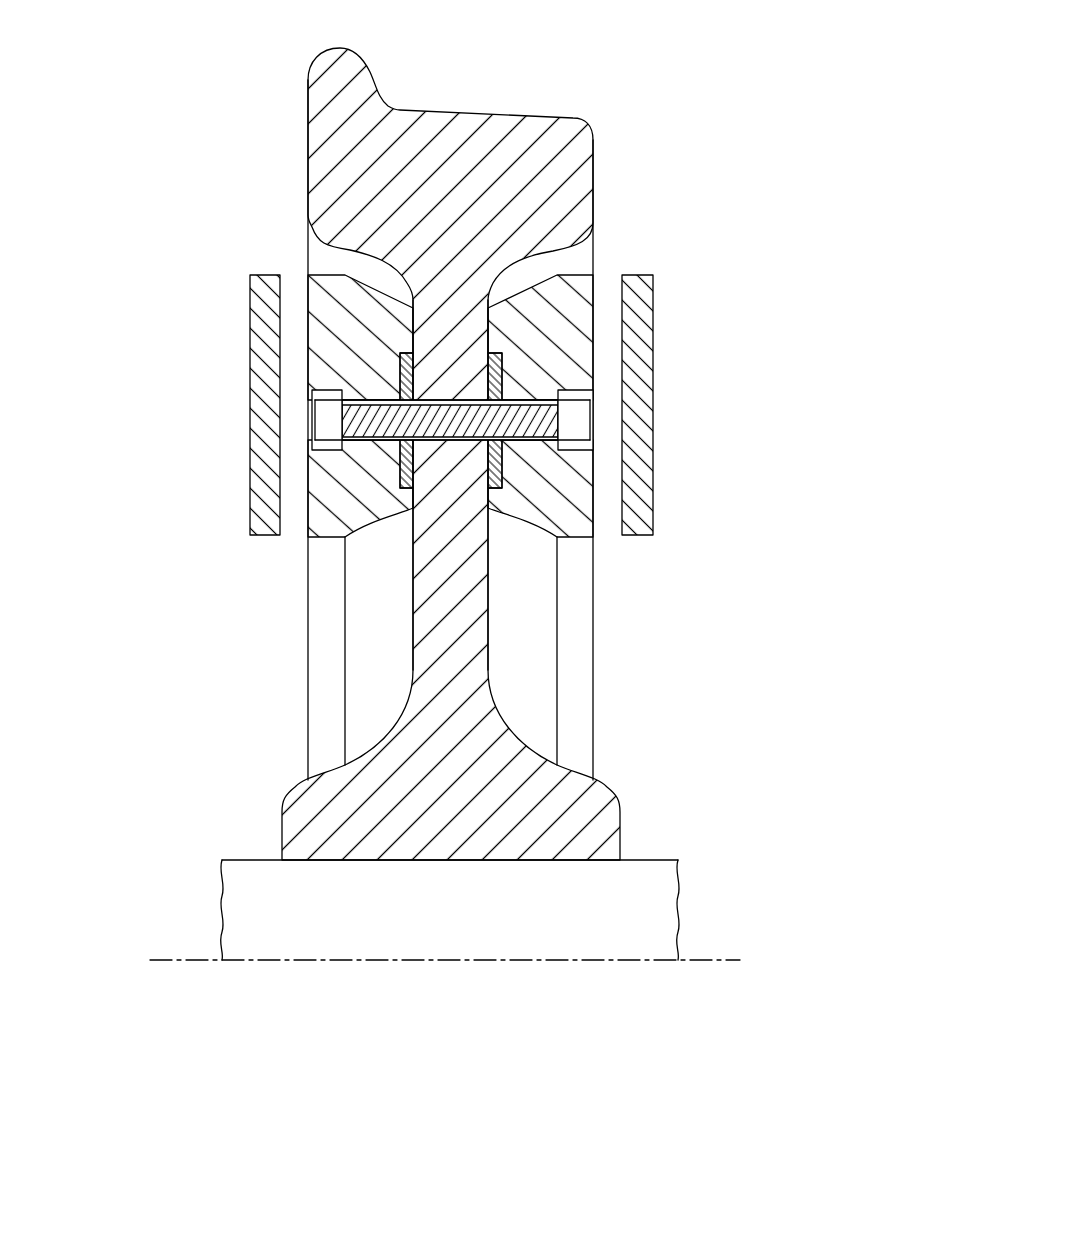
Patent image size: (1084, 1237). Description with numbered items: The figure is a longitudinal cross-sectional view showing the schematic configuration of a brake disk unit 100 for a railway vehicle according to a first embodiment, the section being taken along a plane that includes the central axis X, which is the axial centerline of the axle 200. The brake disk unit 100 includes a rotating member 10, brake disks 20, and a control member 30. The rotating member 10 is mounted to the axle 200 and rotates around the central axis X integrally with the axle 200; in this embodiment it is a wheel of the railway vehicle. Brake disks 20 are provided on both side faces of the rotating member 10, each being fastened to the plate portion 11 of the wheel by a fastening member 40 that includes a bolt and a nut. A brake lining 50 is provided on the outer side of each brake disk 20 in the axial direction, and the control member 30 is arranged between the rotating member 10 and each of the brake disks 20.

The brake disk unit 100 is at (691, 20).
The rotating member 10 is at (466, 110).
The plate portion 11 is at (488, 575).
The brake disk 20 is at (327, 273).
The control member 30 is at (400, 462).
The fastening member 40 is at (575, 421).
The brake lining 50 is at (248, 396).
The axle 200 is at (650, 860).